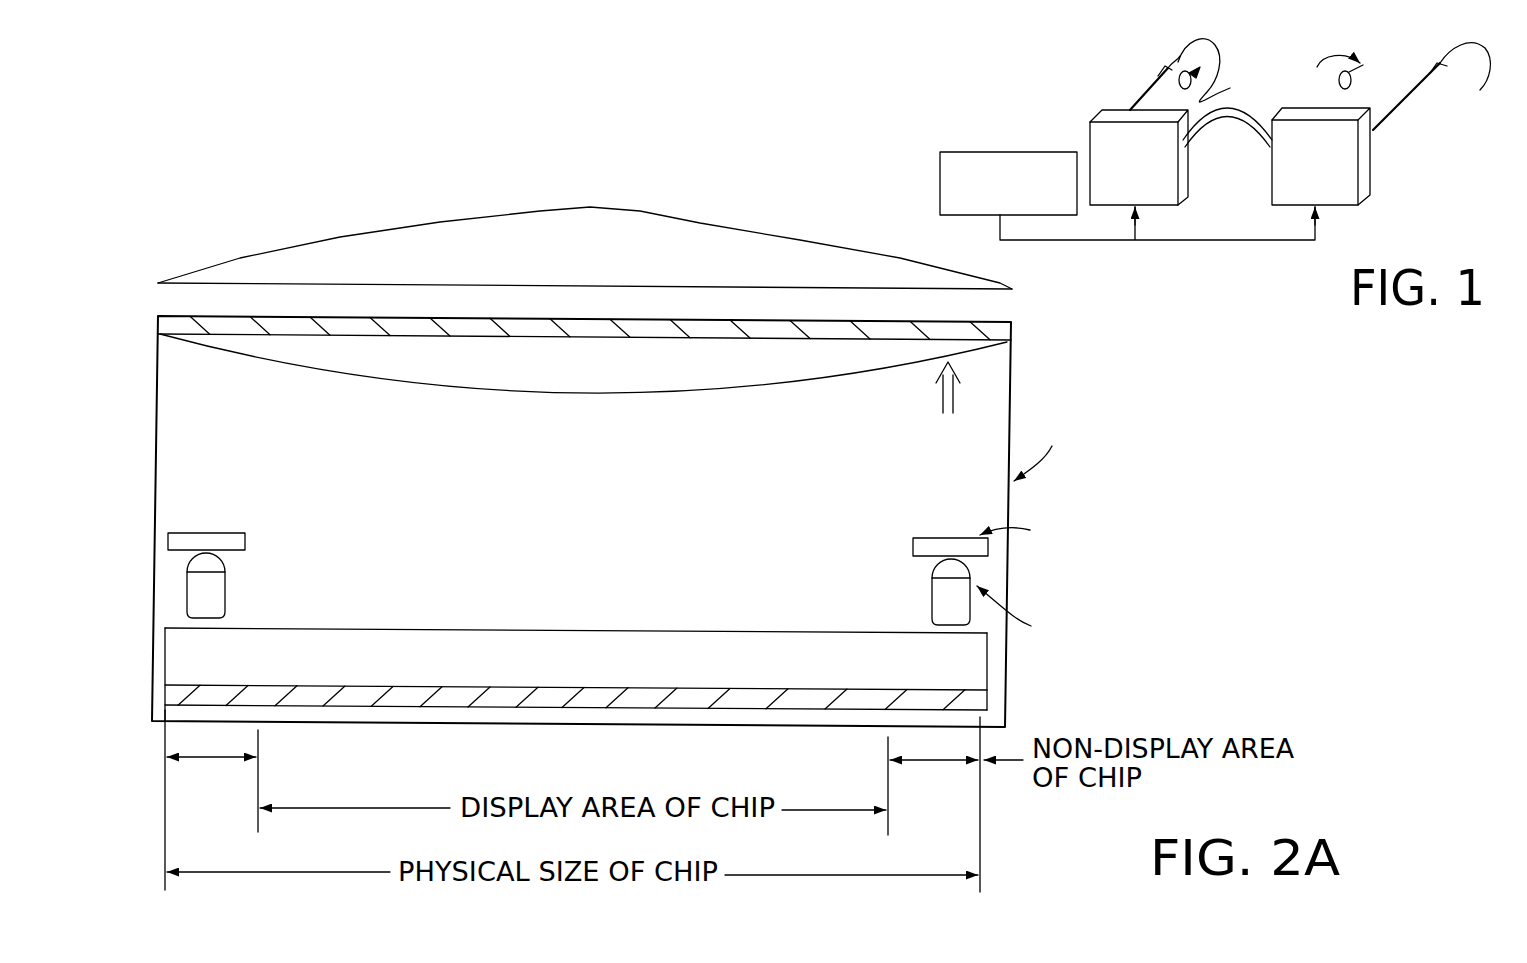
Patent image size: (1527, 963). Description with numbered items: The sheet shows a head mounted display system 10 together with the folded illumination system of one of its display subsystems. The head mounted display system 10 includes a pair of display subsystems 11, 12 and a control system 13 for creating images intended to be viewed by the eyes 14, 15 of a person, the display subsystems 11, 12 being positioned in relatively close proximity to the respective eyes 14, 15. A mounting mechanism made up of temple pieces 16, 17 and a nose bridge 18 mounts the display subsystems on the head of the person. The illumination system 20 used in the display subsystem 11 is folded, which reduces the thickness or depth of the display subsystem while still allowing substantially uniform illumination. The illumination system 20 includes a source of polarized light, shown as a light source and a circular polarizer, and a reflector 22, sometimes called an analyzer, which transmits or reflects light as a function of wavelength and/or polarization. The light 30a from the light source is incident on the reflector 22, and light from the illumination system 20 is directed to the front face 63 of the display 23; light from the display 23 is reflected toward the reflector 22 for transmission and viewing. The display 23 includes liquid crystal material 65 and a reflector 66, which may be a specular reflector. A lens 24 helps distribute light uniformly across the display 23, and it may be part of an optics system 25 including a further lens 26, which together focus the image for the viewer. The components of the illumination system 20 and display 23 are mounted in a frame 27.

In FIG. 1, the head mounted display system 10 is at (1028, 95).
In FIG. 1, the display subsystem 11 is at (1098, 112).
In FIG. 2A, the display subsystem 11 is at (1080, 324).
In FIG. 1, the display subsystem 12 is at (1370, 157).
In FIG. 1, the control system 13 is at (1030, 152).
In FIG. 1, the eye 14 is at (1218, 70).
In FIG. 1, the eye 15 is at (1331, 74).
In FIG. 1, the temple piece 16 is at (1145, 88).
In FIG. 1, the temple piece 17 is at (1408, 93).
In FIG. 1, the nose bridge 18 is at (1235, 115).
In FIG. 2A, the illumination system 20 is at (988, 388).
In FIG. 2A, the reflector 22 is at (967, 326).
In FIG. 2A, the display 23 is at (576, 647).
In FIG. 2A, the lens 24 is at (861, 352).
In FIG. 2A, the optics system 25 is at (1014, 277).
In FIG. 2A, the lens 26 is at (920, 253).
In FIG. 2A, the frame 27 is at (1013, 497).
In FIG. 2A, the light 30a is at (942, 400).
In FIG. 2A, the front face 63 is at (660, 628).
In FIG. 2A, the liquid crystal material 65 is at (468, 660).
In FIG. 2A, the reflector 66 is at (565, 684).